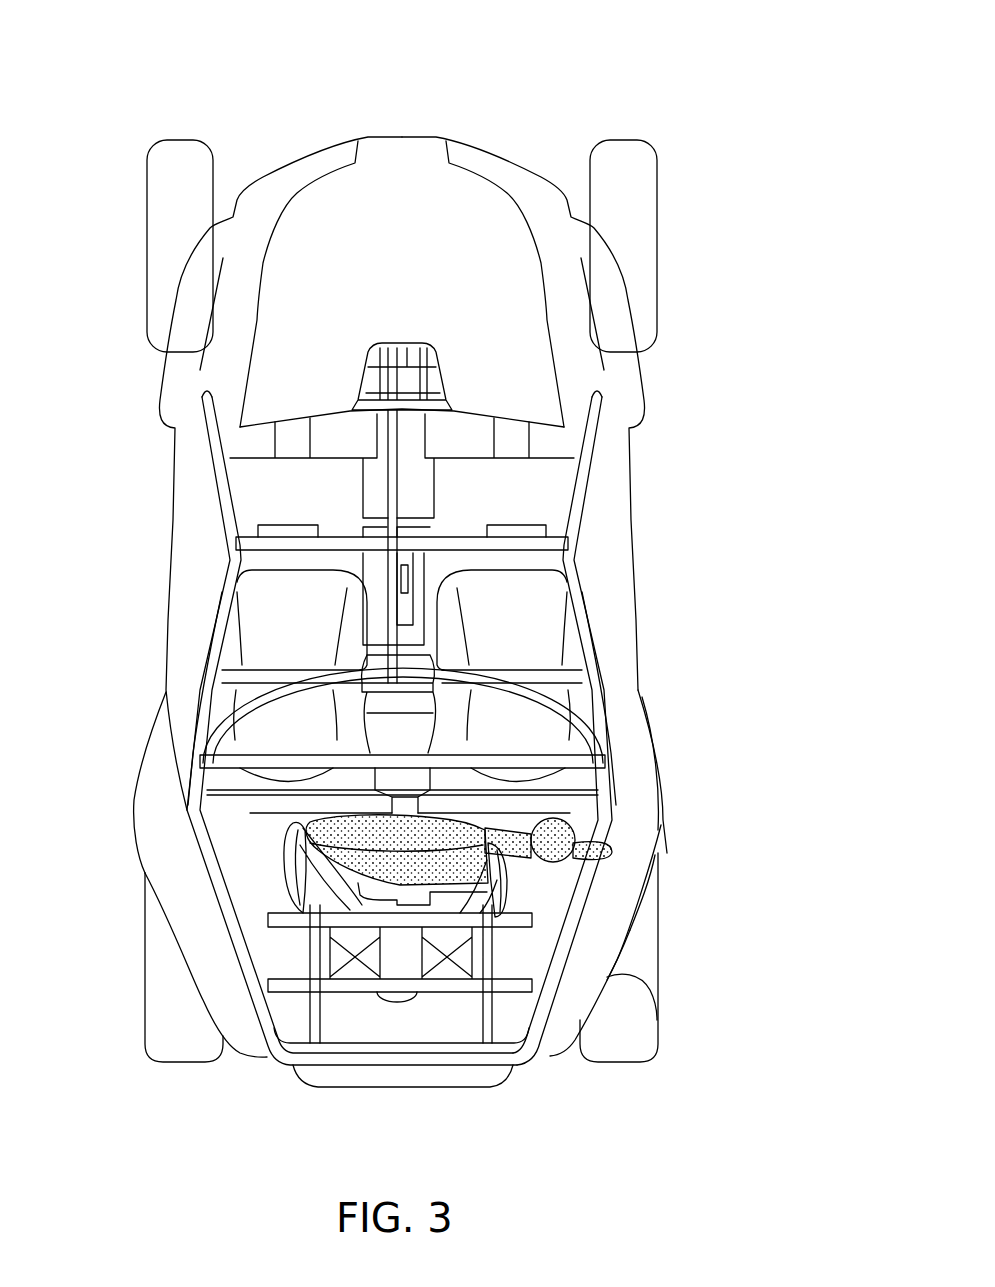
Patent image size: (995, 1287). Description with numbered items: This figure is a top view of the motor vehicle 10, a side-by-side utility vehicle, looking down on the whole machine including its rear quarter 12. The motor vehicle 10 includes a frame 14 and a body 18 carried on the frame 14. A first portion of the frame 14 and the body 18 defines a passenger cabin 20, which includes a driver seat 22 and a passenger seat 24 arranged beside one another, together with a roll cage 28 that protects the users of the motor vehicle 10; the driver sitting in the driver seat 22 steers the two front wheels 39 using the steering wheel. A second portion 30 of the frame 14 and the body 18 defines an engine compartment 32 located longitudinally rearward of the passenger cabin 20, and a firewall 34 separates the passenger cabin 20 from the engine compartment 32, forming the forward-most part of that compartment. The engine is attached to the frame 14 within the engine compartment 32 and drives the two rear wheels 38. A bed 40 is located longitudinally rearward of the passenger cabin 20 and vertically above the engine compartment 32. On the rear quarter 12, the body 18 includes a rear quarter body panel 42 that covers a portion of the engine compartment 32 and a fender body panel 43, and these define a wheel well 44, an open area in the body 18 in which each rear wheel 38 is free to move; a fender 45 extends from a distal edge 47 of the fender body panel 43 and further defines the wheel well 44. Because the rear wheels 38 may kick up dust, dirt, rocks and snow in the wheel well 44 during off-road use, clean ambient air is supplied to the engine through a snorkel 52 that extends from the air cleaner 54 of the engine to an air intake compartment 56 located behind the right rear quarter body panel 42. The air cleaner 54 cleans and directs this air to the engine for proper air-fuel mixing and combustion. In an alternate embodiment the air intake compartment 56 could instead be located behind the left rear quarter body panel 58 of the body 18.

The motor vehicle 10 is at (584, 86).
The rear quarter 12 is at (676, 968).
The frame 14 is at (522, 1066).
The body 18 is at (640, 762).
The passenger cabin 20 is at (398, 578).
The driver seat 22 is at (283, 653).
The passenger seat 24 is at (510, 627).
The roll cage 28 is at (235, 558).
The second portion 30 is at (412, 1067).
The engine compartment 32 is at (395, 1007).
The firewall 34 is at (230, 823).
The rear wheels 38 is at (170, 1012).
The front wheels 39 is at (167, 163).
The bed 40 is at (520, 953).
The rear quarter body panel 42 is at (635, 786).
The fender body panel 43 is at (617, 897).
The wheel well 44 is at (163, 1074).
The fender 45 is at (625, 973).
The distal edge 47 is at (623, 915).
The snorkel 52 is at (573, 815).
The air cleaner 54 is at (430, 860).
The air intake compartment 56 is at (597, 812).
The left rear quarter body panel 58 is at (148, 793).